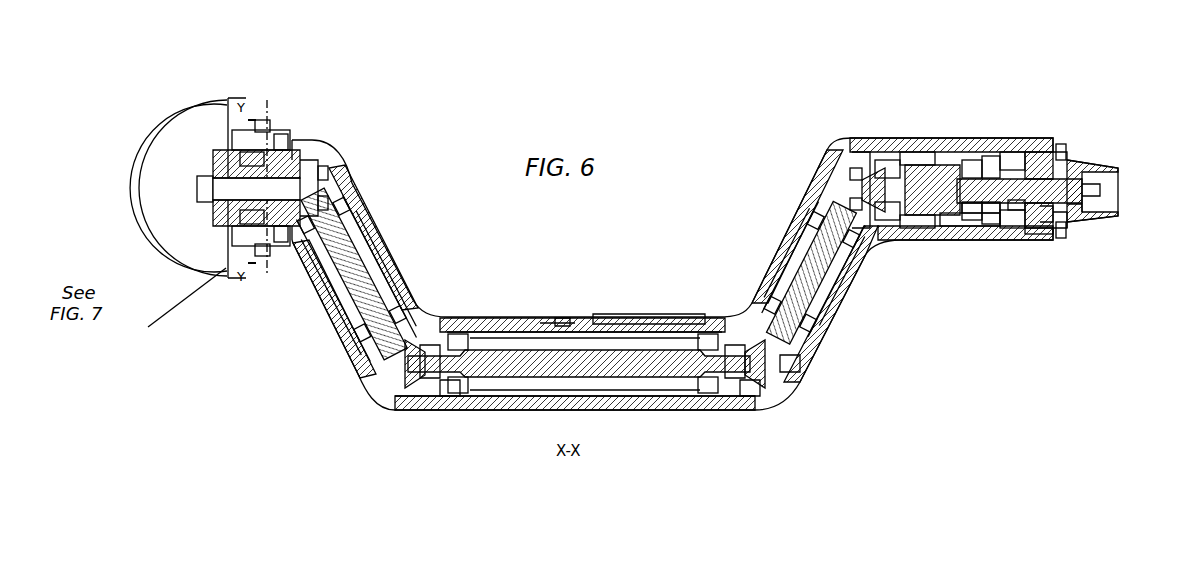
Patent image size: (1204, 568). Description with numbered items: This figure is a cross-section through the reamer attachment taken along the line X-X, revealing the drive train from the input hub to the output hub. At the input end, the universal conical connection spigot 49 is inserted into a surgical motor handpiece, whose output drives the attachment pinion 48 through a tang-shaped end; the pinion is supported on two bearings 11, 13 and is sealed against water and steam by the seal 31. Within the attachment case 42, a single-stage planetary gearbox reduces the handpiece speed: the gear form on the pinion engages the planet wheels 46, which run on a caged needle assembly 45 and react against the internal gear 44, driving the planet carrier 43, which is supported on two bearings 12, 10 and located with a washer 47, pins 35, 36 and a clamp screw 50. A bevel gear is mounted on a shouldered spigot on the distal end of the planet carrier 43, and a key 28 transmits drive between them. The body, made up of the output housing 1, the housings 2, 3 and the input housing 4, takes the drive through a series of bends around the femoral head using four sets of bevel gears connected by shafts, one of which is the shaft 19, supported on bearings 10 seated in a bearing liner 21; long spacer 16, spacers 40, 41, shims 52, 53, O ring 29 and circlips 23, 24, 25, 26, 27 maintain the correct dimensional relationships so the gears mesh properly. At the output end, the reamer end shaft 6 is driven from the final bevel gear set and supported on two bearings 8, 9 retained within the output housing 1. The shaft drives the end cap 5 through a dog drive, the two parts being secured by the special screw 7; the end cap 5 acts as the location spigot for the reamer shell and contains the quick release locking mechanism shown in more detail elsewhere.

The output housing 1 is at (357, 198).
The housing 2 is at (498, 320).
The housing 3 is at (630, 318).
The input housing 4 is at (848, 142).
The end cap 5 is at (232, 140).
The reamer end shaft 6 is at (303, 168).
The special screw 7 is at (200, 187).
The bearing 8 is at (220, 142).
The bearing 9 is at (287, 133).
The bearing 10 is at (452, 317).
The bearing 11 is at (962, 140).
The bearing 12 is at (1033, 158).
The bearing 13 is at (1060, 235).
The long spacer 16 is at (583, 328).
The shaft 19 is at (532, 357).
The bearing liner 21 is at (467, 330).
The circlip 23 is at (1037, 237).
The circlip 24 is at (293, 143).
The circlip 25 is at (347, 180).
The circlip 26 is at (718, 396).
The circlip 27 is at (1070, 230).
The key 28 is at (878, 212).
The O ring 29 is at (565, 323).
The O ring 31 is at (1097, 224).
The pin 35 is at (1000, 240).
The pin 36 is at (1076, 166).
The spacer 40 is at (267, 126).
The spacer 41 is at (250, 130).
The attachment case 42 is at (987, 158).
The planet carrier 43 is at (933, 177).
The internal gear 44 is at (1013, 150).
The caged needle assembly 45 is at (982, 235).
The planet wheel 46 is at (990, 227).
The washer 47 is at (1027, 238).
The attachment pinion 48 is at (1100, 190).
The spigot 49 is at (1088, 162).
The clamp screw 50 is at (1057, 147).
The shim 52 is at (320, 174).
The shim 53 is at (795, 367).